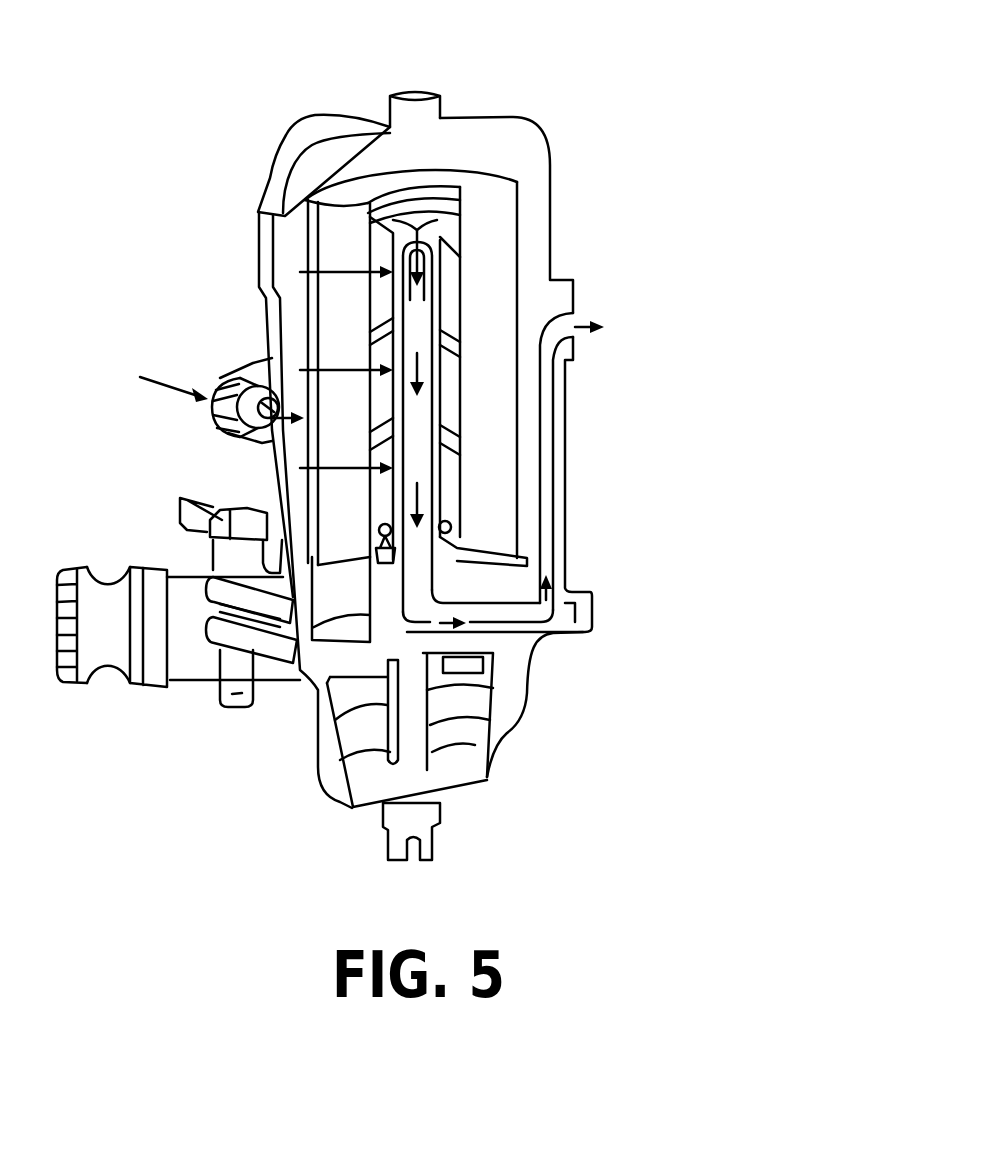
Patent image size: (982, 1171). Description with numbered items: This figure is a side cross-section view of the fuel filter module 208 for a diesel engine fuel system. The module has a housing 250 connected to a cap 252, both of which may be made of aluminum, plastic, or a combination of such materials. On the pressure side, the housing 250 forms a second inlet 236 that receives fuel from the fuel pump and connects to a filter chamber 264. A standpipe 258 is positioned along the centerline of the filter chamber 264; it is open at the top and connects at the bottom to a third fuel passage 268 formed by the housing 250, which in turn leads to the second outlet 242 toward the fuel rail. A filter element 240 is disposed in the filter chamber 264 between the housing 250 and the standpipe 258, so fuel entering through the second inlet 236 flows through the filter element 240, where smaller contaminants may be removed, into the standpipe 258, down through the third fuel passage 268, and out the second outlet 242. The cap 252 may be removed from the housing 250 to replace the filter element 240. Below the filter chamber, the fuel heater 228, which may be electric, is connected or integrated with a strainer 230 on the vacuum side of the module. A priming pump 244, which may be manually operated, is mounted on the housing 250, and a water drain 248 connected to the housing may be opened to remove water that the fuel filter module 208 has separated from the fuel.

The fuel filter module 208 is at (456, 445).
The fuel heater 228 is at (457, 767).
The strainer 230 is at (390, 760).
The second inlet 236 is at (222, 382).
The filter element 240 is at (497, 200).
The second outlet 242 is at (577, 293).
The priming pump 244 is at (197, 690).
The water drain 248 is at (240, 510).
The housing 250 is at (262, 235).
The cap 252 is at (473, 127).
The standpipe 258 is at (420, 307).
The filter chamber 264 is at (278, 265).
The third fuel passage 268 is at (547, 530).